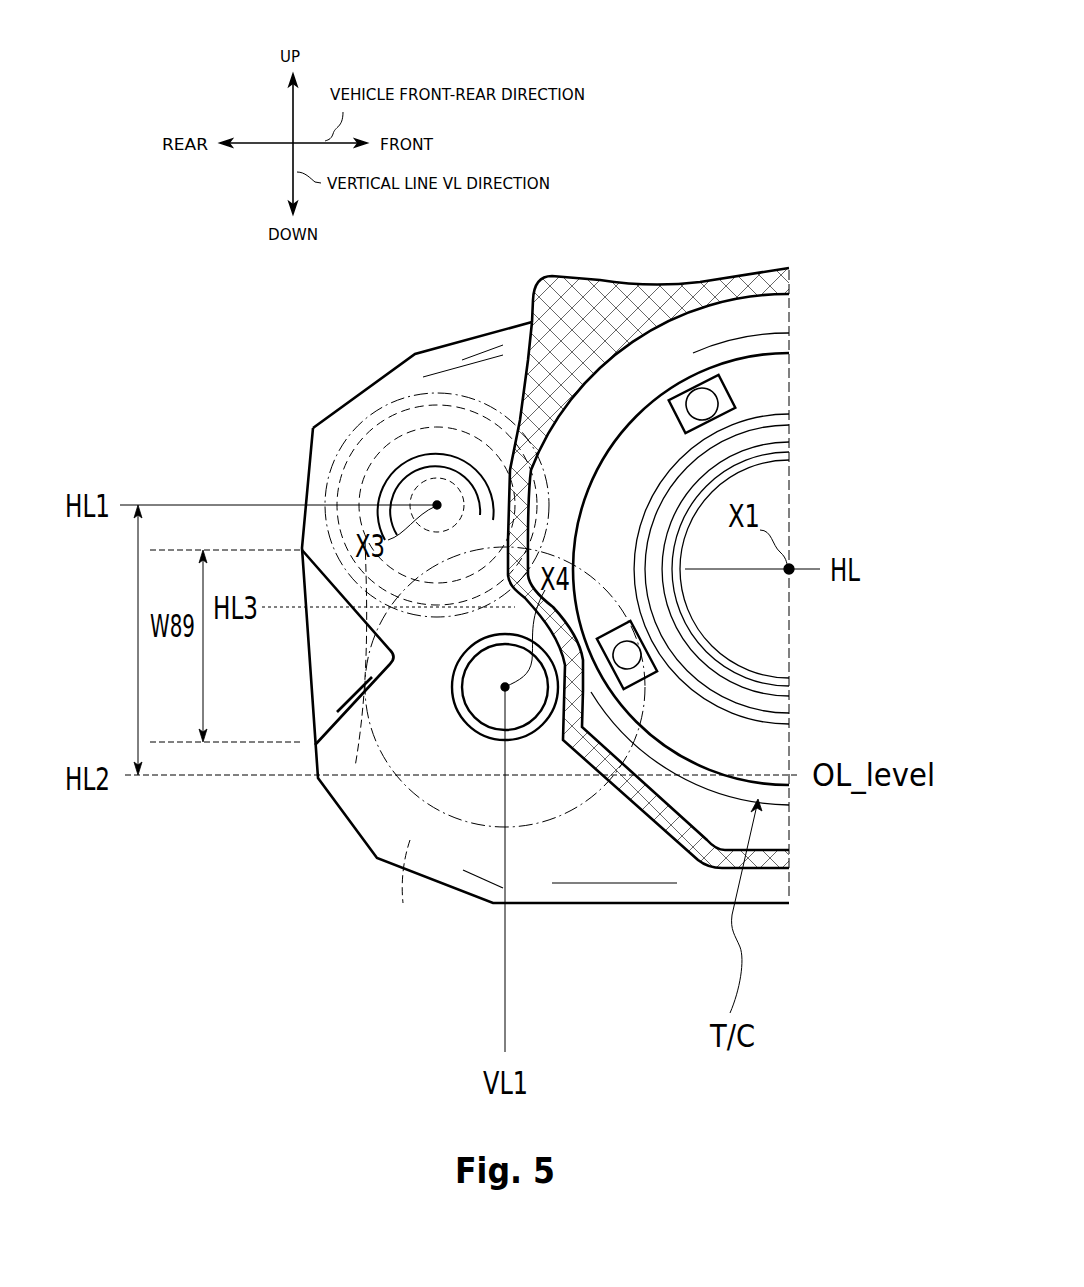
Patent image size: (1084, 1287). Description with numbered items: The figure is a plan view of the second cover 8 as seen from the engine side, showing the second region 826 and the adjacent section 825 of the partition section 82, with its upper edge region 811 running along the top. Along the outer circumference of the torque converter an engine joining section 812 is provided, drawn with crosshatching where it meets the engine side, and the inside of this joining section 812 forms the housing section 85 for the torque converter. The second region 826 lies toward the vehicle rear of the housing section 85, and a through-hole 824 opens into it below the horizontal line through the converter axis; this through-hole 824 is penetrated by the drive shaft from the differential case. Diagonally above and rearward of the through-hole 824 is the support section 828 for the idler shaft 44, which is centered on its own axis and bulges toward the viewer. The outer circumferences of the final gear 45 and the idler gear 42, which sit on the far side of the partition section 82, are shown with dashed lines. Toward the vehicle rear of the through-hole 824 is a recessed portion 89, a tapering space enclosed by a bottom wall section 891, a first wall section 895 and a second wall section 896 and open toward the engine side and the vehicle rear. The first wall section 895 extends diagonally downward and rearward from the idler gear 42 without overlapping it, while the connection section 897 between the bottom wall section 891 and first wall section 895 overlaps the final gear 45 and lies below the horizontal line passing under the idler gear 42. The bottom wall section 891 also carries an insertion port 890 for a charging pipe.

The second cover 8 is at (642, 287).
The joining section 812 is at (749, 288).
The case wall portion 811 is at (424, 366).
The idler gear 42 is at (363, 430).
The support section 828 is at (488, 498).
The idler shaft 44 is at (424, 490).
The housing section 85 is at (645, 401).
The partition section 82 is at (666, 975).
The recessed portion 89 is at (300, 661).
The second wall section 896 is at (313, 707).
The connection section 897 is at (382, 643).
The first wall section 895 is at (395, 623).
The bottom wall section 891 is at (393, 687).
The insertion port 890 is at (317, 782).
The final gear 45 is at (413, 860).
The second region 826 is at (562, 852).
The side wall portion 825 is at (670, 793).
The through-hole 824 is at (522, 705).